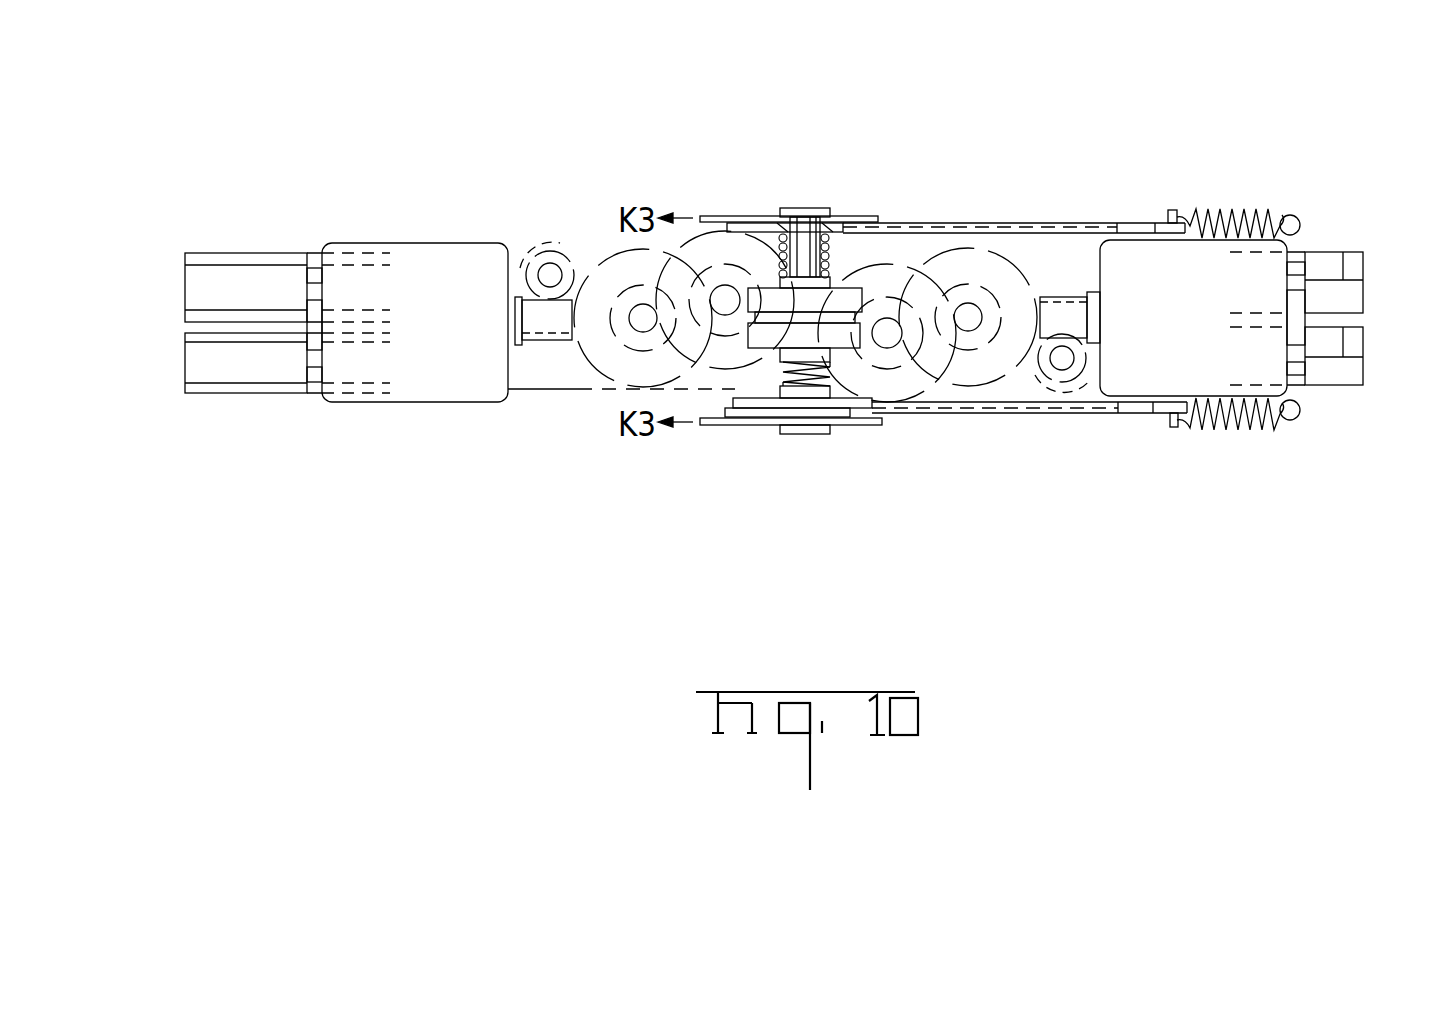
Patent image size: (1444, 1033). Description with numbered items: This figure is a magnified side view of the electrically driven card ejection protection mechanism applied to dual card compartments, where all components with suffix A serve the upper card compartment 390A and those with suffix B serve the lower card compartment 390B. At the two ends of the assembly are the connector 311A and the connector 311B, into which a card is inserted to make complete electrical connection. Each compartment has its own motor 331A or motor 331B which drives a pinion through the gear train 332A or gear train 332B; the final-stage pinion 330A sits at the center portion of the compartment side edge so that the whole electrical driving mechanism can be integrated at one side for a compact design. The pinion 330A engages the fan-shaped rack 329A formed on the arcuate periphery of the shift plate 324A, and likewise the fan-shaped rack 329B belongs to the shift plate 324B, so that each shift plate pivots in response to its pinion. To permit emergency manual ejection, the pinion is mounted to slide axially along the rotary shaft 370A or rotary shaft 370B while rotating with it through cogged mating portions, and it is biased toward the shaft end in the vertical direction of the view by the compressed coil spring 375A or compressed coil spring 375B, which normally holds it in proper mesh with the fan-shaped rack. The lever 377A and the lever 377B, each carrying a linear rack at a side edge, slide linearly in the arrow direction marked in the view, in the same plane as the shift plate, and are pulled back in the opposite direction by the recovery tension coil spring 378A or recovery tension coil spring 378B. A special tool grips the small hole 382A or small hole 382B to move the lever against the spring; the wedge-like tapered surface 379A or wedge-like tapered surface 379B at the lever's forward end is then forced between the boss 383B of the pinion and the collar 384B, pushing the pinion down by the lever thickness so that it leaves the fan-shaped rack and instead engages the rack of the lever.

The upper card compartment 390A is at (268, 257).
The lower card compartment 390B is at (212, 390).
The motor 331A is at (427, 250).
The motor 331B is at (1167, 383).
The gear train 332A is at (615, 245).
The gear train 332B is at (1035, 425).
The fan-shaped rack 329A is at (737, 232).
The fan-shaped rack 329B is at (752, 398).
The pinion 330A is at (778, 270).
The rotary shaft 370A is at (801, 290).
The rotary shaft 370B is at (772, 352).
The compressed coil spring 375A is at (872, 250).
The compressed coil spring 375B is at (890, 365).
The wedge-like tapered surface 379A is at (840, 230).
The wedge-like tapered surface 379B is at (860, 415).
The small hole 382A is at (708, 218).
The small hole 382B is at (712, 425).
The boss 383B is at (840, 418).
The collar 384B is at (783, 434).
The lever 377A is at (1028, 222).
The lever 377B is at (1010, 415).
The shift plate 324A is at (1065, 222).
The shift plate 324B is at (1087, 417).
The recovery tension coil spring 378A is at (1218, 213).
The recovery tension coil spring 378B is at (1252, 427).
The connector 311A is at (1340, 262).
The connector 311B is at (1338, 383).